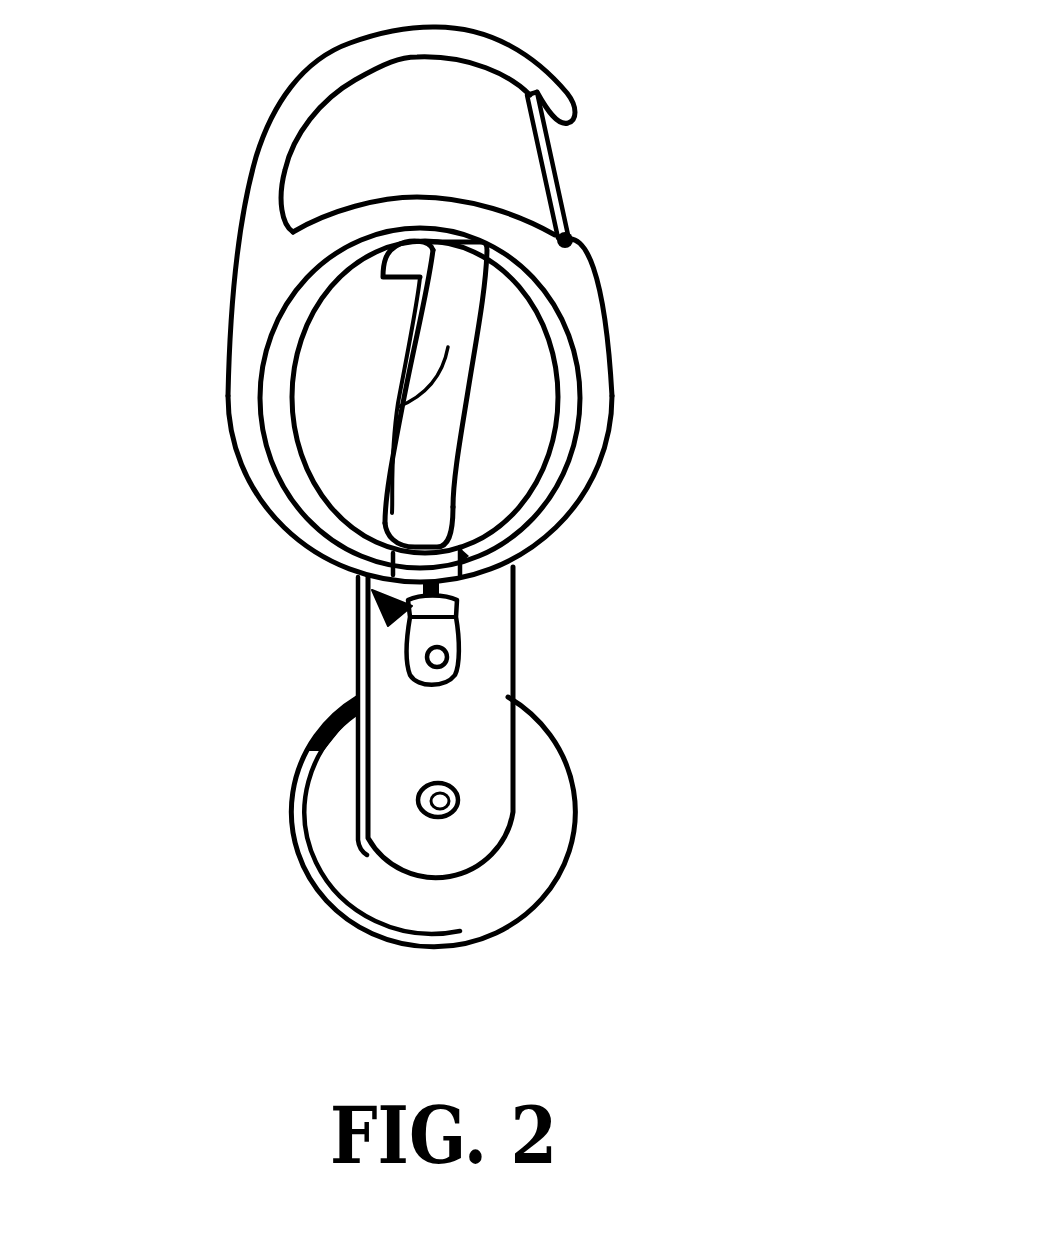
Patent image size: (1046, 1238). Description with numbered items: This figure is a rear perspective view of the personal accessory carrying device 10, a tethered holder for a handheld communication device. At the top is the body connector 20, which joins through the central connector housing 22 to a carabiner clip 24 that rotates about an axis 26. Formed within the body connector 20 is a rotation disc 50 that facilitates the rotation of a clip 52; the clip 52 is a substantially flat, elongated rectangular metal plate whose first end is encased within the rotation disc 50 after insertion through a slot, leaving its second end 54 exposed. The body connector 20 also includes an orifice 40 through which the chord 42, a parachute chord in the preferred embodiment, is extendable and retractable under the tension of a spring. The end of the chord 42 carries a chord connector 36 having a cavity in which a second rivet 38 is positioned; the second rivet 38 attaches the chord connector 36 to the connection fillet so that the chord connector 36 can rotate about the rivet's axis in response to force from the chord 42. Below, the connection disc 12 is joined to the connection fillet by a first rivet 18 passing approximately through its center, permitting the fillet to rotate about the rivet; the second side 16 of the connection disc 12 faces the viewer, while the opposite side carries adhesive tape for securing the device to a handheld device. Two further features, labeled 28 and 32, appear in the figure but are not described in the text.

The personal accessory carrying device 10 is at (690, 318).
The connection disc 12 is at (540, 785).
The second side 16 is at (322, 787).
The first rivet 18 is at (463, 803).
The body connector 20 is at (259, 171).
The central connector housing 22 is at (570, 362).
The carabiner clip 24 is at (550, 157).
The axis 26 is at (580, 232).
The inner ring edge 28 is at (575, 412).
The plate 32 is at (417, 843).
The chord connector 36 is at (450, 637).
The second rivet 38 is at (453, 657).
The orifice 40 is at (382, 608).
The chord 42 is at (447, 593).
The rotation disc 50 is at (332, 456).
The clip 52 is at (400, 410).
The second end 54 is at (435, 513).